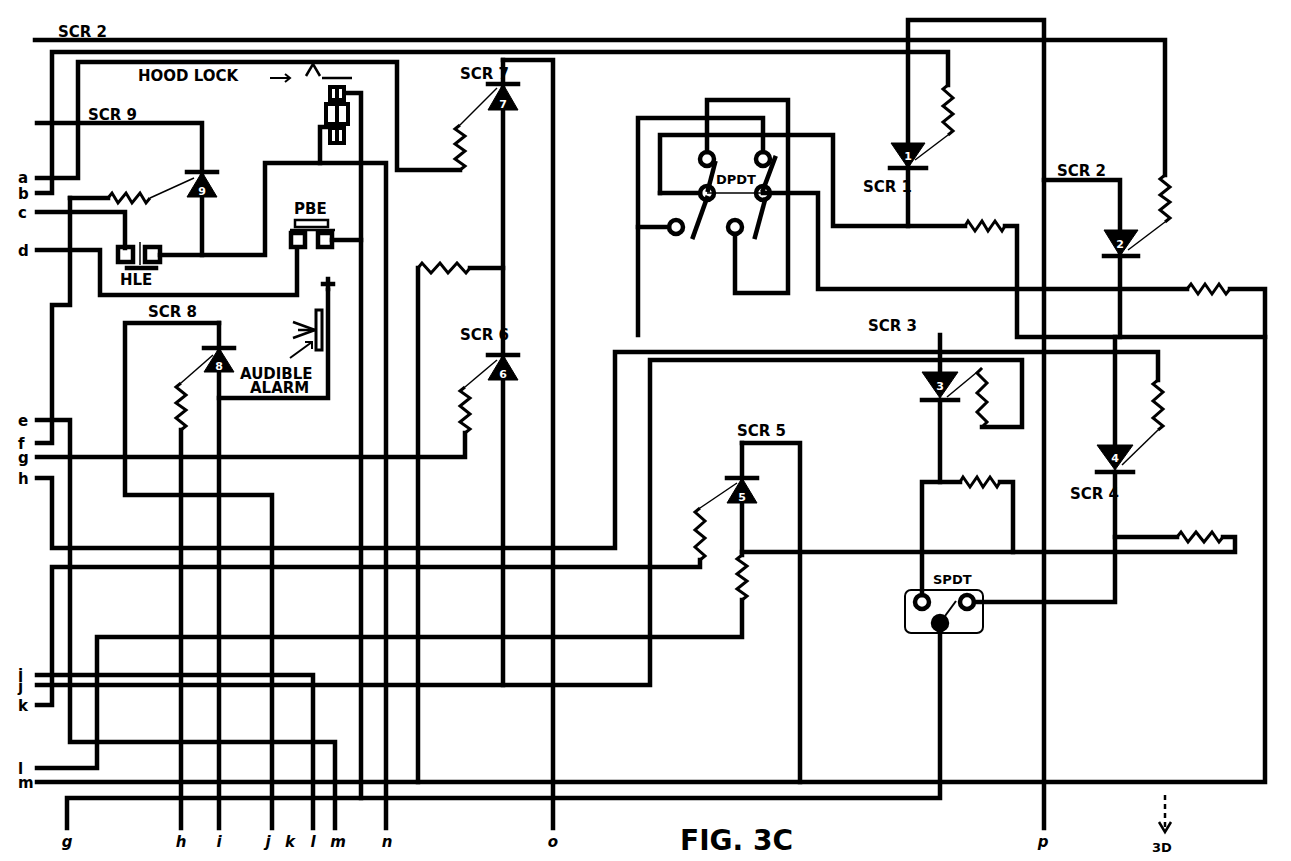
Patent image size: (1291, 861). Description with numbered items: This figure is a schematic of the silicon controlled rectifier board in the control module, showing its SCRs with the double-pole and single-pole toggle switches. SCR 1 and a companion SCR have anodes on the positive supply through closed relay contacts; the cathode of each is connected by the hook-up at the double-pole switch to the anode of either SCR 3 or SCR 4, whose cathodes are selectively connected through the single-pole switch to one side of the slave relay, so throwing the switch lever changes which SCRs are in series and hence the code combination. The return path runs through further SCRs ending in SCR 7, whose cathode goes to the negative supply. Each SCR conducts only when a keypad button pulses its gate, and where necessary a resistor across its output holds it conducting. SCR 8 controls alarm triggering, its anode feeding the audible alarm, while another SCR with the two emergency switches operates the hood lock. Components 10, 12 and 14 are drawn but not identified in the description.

The silicon controlled rectifier (SCR 1) 1 is at (938, 109).
The silicon controlled rectifier (SCR 3) 3 is at (1176, 198).
The silicon controlled rectifier (SCR 4) 4 is at (360, 115).
The silicon controlled rectifier (SCR 7) 7 is at (129, 187).
The silicon controlled rectifier (SCR 8) 8 is at (454, 410).
The gate resistor of SCR 4 10 is at (1173, 398).
The gate resistor of SCR 5 12 is at (683, 534).
The gate resistor of SCR 3 14 is at (996, 397).